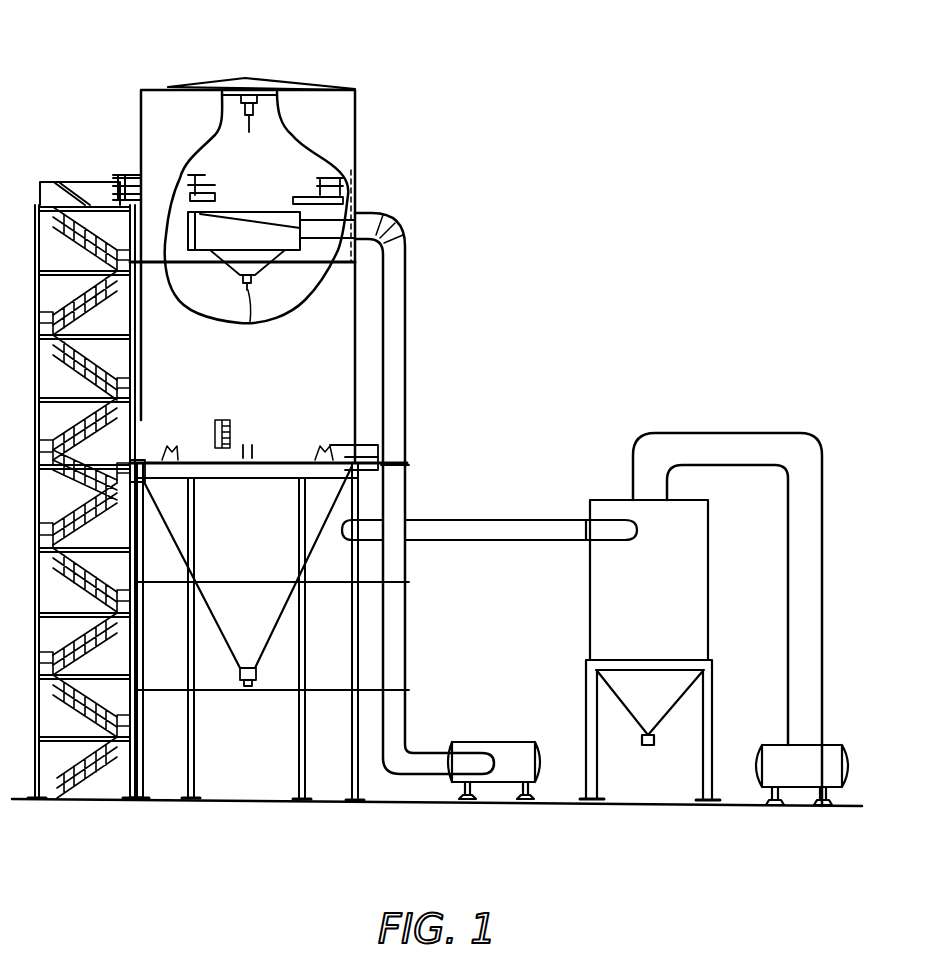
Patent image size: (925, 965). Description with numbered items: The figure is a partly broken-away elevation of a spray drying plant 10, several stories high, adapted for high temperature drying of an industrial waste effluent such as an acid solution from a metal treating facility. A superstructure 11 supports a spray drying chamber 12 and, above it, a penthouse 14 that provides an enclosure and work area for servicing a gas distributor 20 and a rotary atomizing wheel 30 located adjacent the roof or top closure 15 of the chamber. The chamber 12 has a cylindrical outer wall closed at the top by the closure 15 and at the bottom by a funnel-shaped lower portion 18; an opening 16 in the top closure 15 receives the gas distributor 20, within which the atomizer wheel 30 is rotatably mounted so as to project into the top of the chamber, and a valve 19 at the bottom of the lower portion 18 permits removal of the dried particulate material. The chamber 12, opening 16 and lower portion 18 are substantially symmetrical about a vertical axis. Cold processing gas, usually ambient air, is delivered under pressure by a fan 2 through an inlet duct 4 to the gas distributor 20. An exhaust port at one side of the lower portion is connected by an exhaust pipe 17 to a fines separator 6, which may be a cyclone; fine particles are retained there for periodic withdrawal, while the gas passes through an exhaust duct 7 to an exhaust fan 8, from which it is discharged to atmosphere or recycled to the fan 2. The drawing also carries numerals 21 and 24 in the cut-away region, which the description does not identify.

The fan 2 is at (493, 752).
The inlet duct 4 is at (400, 378).
The fines separator 6 is at (600, 583).
The exhaust duct 7 is at (803, 554).
The exhaust fan 8 is at (762, 766).
The spray drying plant 10 is at (425, 236).
The superstructure 11 is at (187, 777).
The spray drying chamber 12 is at (340, 372).
The penthouse 14 is at (183, 88).
The top closure 15 is at (182, 280).
The opening 16 is at (282, 268).
The exhaust pipe 17 is at (434, 522).
The conical-shaped lower portion 18 is at (268, 610).
The valve 19 is at (248, 686).
The gas distributor 20 is at (209, 240).
The spray nozzles 21 is at (290, 212).
The atomizer nozzle 24 is at (238, 262).
The rotary atomizing wheel 30 is at (250, 322).